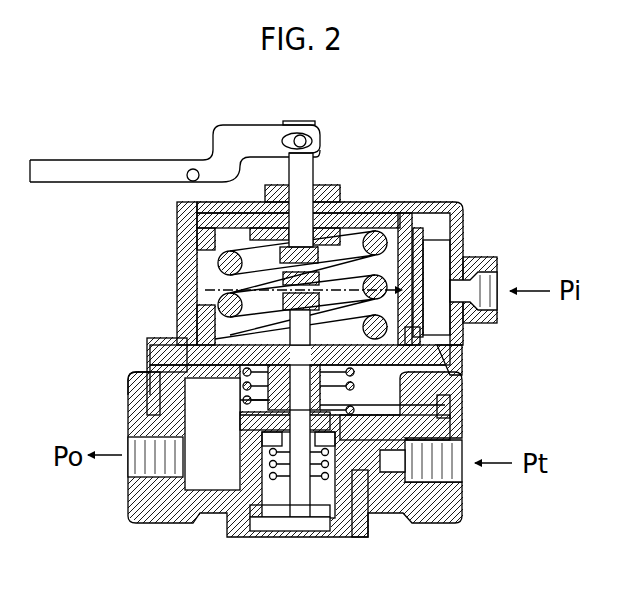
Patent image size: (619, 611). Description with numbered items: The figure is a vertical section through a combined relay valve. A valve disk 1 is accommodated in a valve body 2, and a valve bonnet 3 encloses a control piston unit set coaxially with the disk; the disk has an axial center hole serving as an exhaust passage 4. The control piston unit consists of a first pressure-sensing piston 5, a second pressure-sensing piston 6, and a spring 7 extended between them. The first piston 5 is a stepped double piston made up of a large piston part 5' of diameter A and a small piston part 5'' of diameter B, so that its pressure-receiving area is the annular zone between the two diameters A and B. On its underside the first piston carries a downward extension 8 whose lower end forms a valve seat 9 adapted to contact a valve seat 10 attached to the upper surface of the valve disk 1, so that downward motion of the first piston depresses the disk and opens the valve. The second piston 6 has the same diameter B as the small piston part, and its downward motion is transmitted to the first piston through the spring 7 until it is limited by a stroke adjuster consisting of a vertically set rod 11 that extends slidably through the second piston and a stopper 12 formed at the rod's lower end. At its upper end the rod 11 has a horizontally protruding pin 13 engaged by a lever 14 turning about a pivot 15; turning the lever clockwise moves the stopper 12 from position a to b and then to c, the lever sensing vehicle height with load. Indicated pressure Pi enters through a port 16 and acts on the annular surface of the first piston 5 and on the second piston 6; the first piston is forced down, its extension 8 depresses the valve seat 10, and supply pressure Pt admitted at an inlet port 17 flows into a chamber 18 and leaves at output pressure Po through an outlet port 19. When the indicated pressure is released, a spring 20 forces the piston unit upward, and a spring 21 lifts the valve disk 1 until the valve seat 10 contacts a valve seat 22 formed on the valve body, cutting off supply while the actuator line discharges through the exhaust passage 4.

The valve disk 1 is at (288, 520).
The valve body 2 is at (452, 512).
The valve bonnet 3 is at (445, 210).
The exhaust passage 4 is at (300, 500).
The first pressure-sensing piston 5 is at (284, 283).
The large piston part 5' is at (477, 370).
The small piston part 5'' is at (462, 345).
The second pressure-sensing piston 6 is at (198, 215).
The spring 7 is at (218, 265).
The downward extension 8 is at (168, 354).
The valve seat 9 is at (142, 381).
The valve seat 10 is at (226, 478).
The rod 11 is at (305, 192).
The stopper 12 is at (340, 240).
The pin 13 is at (318, 141).
The lever 14 is at (84, 170).
The pivot 15 is at (187, 170).
The port 16 is at (494, 285).
The inlet port 17 is at (455, 473).
The chamber 18 is at (168, 398).
The outlet port 19 is at (140, 465).
The spring 20 is at (455, 410).
The spring 21 is at (348, 520).
The valve seat 22 is at (355, 520).
The stopper position a is at (385, 208).
The stopper position b is at (422, 242).
The stopper position c is at (418, 292).
The diameter A is at (345, 402).
The diameter B is at (303, 290).